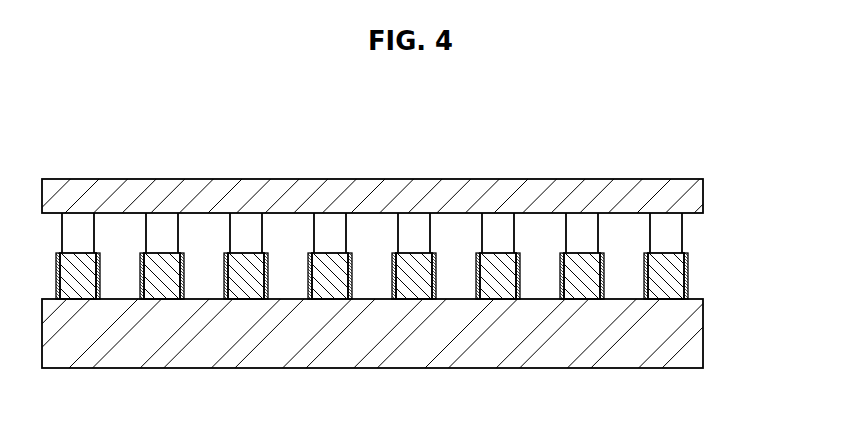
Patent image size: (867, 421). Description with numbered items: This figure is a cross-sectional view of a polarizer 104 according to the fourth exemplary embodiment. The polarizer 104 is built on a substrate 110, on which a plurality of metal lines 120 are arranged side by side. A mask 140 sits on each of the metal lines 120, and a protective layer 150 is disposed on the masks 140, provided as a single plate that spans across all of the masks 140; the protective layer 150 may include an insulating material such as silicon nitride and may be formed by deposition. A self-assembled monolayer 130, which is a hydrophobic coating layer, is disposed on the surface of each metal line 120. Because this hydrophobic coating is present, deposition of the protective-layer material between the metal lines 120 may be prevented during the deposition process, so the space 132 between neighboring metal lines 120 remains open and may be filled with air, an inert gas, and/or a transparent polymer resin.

The polarizer 104 is at (93, 148).
The substrate 110 is at (688, 330).
The metal line 120 is at (665, 268).
The self-assembled monolayer 130 is at (688, 286).
The space 132 is at (625, 273).
The mask 140 is at (670, 230).
The protective layer 150 is at (688, 195).